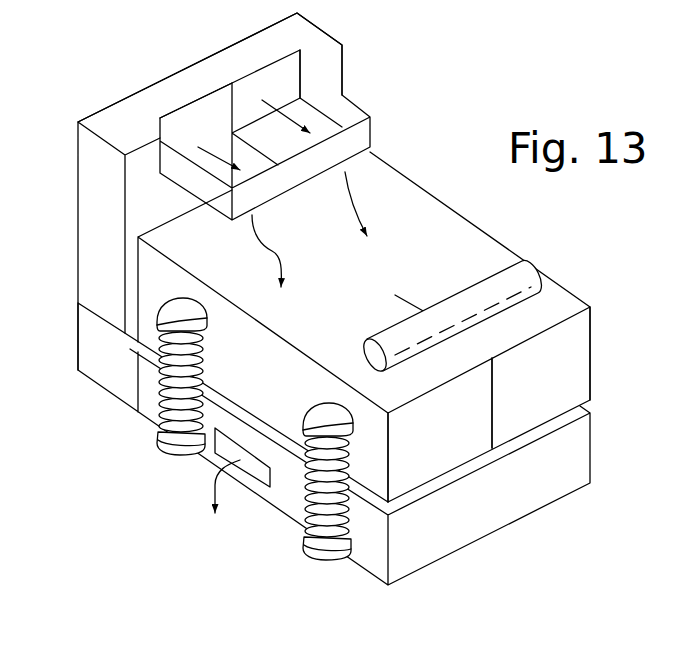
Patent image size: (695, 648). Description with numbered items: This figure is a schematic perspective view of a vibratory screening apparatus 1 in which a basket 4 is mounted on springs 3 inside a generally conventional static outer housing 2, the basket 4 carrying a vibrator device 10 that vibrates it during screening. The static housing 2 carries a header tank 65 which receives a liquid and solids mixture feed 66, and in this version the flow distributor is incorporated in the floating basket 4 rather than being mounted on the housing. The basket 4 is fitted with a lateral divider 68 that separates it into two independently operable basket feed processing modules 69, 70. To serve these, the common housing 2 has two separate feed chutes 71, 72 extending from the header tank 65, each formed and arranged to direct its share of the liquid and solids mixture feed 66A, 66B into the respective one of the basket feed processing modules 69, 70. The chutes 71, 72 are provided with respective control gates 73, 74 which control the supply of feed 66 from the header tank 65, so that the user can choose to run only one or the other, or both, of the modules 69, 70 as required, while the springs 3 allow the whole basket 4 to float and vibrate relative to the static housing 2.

The vibratory screening apparatus 1 is at (62, 227).
The static outer housing 2 is at (141, 414).
The springs 3 is at (304, 497).
The basket 4 is at (385, 353).
The vibrator device 10 is at (527, 272).
The header tank 65 is at (90, 144).
The liquid and solids mixture feed 66 is at (235, 110).
The liquid and solids mixture feed 66A is at (357, 188).
The liquid and solids mixture feed 66B is at (258, 243).
The lateral divider 68 is at (492, 373).
The basket feed processing module 69 is at (537, 400).
The basket feed processing module 70 is at (457, 442).
The feed chute 71 is at (313, 110).
The feed chute 72 is at (199, 157).
The control gate 73 is at (272, 78).
The control gate 74 is at (203, 112).